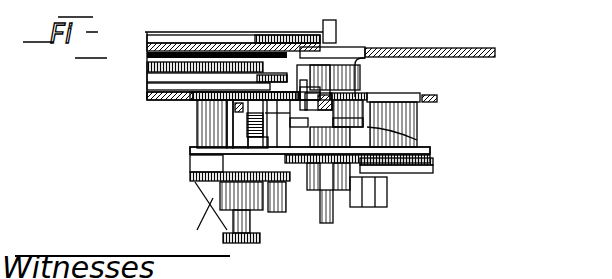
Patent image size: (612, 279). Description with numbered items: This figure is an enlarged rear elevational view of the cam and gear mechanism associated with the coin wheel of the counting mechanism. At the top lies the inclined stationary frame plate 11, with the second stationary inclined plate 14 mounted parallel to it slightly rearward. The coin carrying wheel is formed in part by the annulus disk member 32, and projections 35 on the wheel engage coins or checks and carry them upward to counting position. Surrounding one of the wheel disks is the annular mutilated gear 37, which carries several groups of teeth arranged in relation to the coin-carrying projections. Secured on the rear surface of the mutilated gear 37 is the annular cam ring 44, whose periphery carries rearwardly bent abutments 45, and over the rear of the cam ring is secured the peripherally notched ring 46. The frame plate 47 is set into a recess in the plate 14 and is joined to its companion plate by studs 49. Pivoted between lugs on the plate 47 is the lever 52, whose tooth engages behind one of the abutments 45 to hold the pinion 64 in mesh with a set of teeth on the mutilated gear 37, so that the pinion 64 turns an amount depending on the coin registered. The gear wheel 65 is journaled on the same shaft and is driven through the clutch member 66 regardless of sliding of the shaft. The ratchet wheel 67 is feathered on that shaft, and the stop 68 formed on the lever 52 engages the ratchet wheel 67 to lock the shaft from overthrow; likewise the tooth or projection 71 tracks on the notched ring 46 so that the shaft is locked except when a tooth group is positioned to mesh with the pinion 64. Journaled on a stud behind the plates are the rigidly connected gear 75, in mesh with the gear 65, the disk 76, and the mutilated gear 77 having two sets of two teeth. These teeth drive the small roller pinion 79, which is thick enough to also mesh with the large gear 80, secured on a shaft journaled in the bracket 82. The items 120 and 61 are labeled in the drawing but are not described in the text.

The frame plate 11 is at (433, 48).
The stationary inclined plate 14 is at (445, 100).
The top plate 120 is at (212, 61).
The annulus disk member 32 is at (293, 34).
The projections 35 is at (338, 24).
The annular mutilated gear 37 is at (177, 58).
The annular cam ring 44 is at (147, 62).
The abutments 45 is at (200, 100).
The peripherally notched ring 46 is at (160, 100).
The frame plate 47 is at (185, 115).
The studs 49 is at (405, 117).
The lever 52 is at (352, 86).
The spindle 61 is at (233, 217).
The pinion 64 is at (352, 49).
The gear wheel 65 is at (350, 207).
The clutch member 66 is at (327, 203).
The ratchet wheel 67 is at (417, 140).
The stop 68 is at (370, 96).
The tooth or projection 71 is at (270, 80).
The gear 75 is at (420, 160).
The disk 76 is at (420, 170).
The mutilated gear 77 is at (410, 183).
The roller pinion 79 is at (290, 183).
The large gear 80 is at (189, 206).
The bracket 82 is at (190, 223).